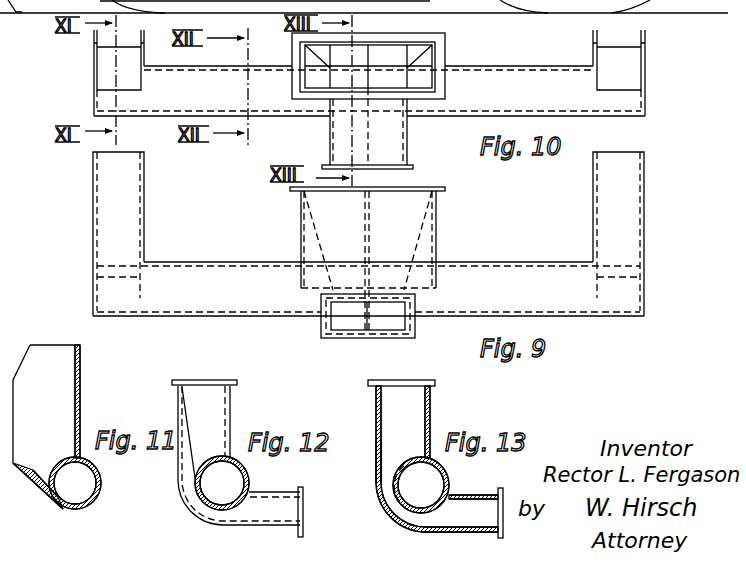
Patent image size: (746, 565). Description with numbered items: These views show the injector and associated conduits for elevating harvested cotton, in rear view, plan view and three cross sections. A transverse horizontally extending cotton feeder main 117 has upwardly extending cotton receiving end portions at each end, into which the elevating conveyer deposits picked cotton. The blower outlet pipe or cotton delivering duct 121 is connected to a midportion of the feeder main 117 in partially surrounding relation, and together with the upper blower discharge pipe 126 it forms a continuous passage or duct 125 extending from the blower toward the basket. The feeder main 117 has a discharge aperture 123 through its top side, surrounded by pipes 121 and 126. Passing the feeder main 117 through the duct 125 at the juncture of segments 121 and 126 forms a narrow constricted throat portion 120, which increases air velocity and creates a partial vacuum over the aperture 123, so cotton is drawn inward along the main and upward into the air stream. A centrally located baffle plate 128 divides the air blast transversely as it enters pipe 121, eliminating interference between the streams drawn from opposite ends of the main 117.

In FIG. 10, the cotton feeder main 117 is at (505, 66).
In FIG. 9, the cotton feeder main 117 is at (507, 262).
In FIG. 11, the cotton feeder main 117 is at (102, 479).
In FIG. 12, the cotton feeder main 117 is at (252, 481).
In FIG. 13, the cotton feeder main 117 is at (447, 470).
In FIG. 13, the constricted throat portion 120 is at (383, 487).
In FIG. 10, the blower discharge pipe 121 is at (328, 132).
In FIG. 9, the blower discharge pipe 121 is at (321, 330).
In FIG. 12, the blower discharge pipe 121 is at (278, 529).
In FIG. 13, the blower discharge pipe 121 is at (472, 533).
In FIG. 10, the discharge aperture 123 is at (385, 78).
In FIG. 13, the discharge aperture 123 is at (406, 464).
In FIG. 12, the continuous duct 125 is at (174, 396).
In FIG. 13, the continuous duct 125 is at (373, 400).
In FIG. 10, the blower discharge pipe 126 is at (447, 54).
In FIG. 9, the blower discharge pipe 126 is at (426, 208).
In FIG. 12, the blower discharge pipe 126 is at (231, 405).
In FIG. 13, the blower discharge pipe 126 is at (432, 405).
In FIG. 10, the baffle plate 128 is at (384, 33).
In FIG. 9, the baffle plate 128 is at (364, 231).